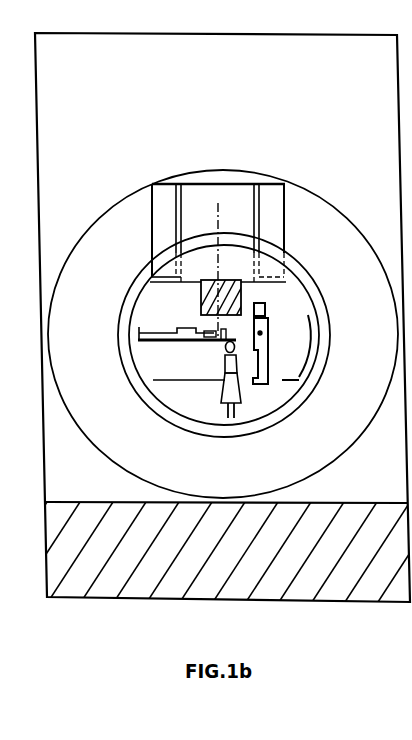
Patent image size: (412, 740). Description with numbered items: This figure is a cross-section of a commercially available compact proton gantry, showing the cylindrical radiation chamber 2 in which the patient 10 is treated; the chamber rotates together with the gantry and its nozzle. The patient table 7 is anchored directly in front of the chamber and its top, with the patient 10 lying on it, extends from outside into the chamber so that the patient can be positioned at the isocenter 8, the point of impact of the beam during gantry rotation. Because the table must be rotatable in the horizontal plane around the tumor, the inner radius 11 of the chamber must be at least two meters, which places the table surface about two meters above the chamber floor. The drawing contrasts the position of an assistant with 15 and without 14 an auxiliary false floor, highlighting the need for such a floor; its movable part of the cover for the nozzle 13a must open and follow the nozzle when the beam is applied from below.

The radiation chamber 2 is at (320, 310).
The inner radius 11 is at (305, 288).
The patient table 7 is at (168, 342).
The isocenter 8 is at (213, 330).
The patient 10 is at (197, 333).
The movable part of the cover for the nozzle 13a is at (188, 381).
The assistant position without auxiliary floor 14 is at (240, 390).
The assistant position with auxiliary floor 15 is at (262, 336).